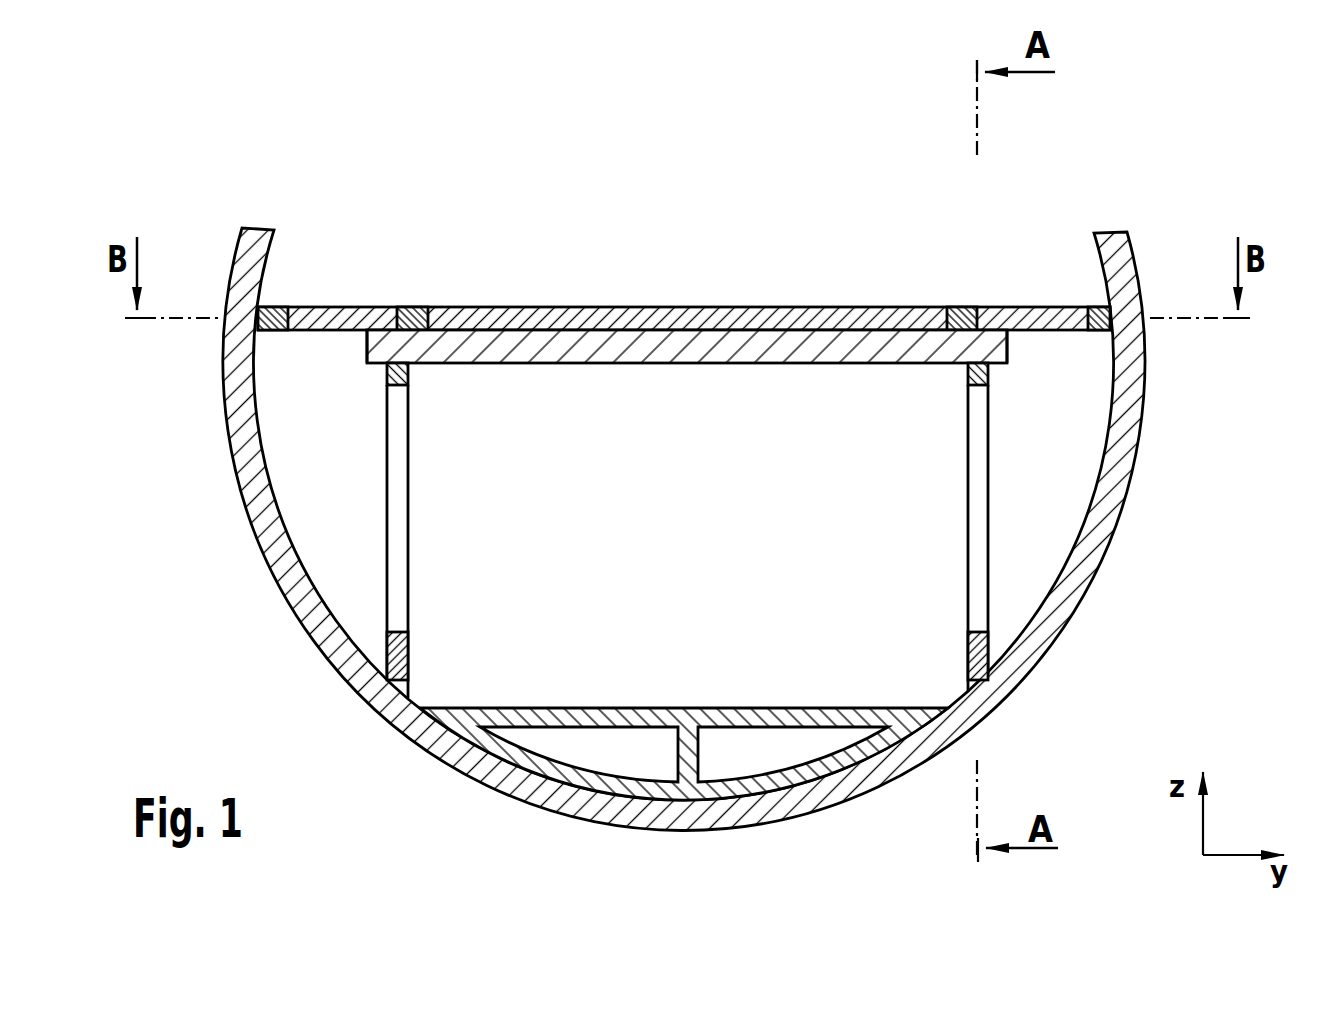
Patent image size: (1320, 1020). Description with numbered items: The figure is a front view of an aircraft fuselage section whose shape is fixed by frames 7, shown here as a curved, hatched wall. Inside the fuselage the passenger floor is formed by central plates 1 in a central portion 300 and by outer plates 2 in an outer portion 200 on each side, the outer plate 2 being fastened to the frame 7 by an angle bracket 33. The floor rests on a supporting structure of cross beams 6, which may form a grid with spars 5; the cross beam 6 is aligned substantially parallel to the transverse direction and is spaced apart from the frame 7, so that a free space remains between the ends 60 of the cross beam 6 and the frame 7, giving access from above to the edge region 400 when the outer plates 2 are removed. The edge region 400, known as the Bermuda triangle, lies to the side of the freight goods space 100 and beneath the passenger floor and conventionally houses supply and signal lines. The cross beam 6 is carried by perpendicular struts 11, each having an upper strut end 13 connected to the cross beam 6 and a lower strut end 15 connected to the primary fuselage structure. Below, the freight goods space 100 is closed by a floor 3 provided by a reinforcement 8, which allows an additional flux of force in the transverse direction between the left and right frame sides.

The central plate 1 is at (623, 292).
The outer plate 2 is at (363, 292).
The floor 3 is at (645, 706).
The spar 5 is at (413, 318).
The cross beam 6 is at (623, 350).
The frame 7 is at (1105, 535).
The reinforcement 8 is at (447, 745).
The perpendicular strut 11 is at (405, 512).
The upper strut end 13 is at (405, 372).
The lower strut end 15 is at (405, 655).
The angle bracket 33 is at (276, 312).
The end of cross beam 60 is at (367, 347).
The freight goods space 100 is at (795, 662).
The outer portion 200 is at (388, 195).
The central portion 300 is at (967, 195).
The edge region 400 is at (332, 494).